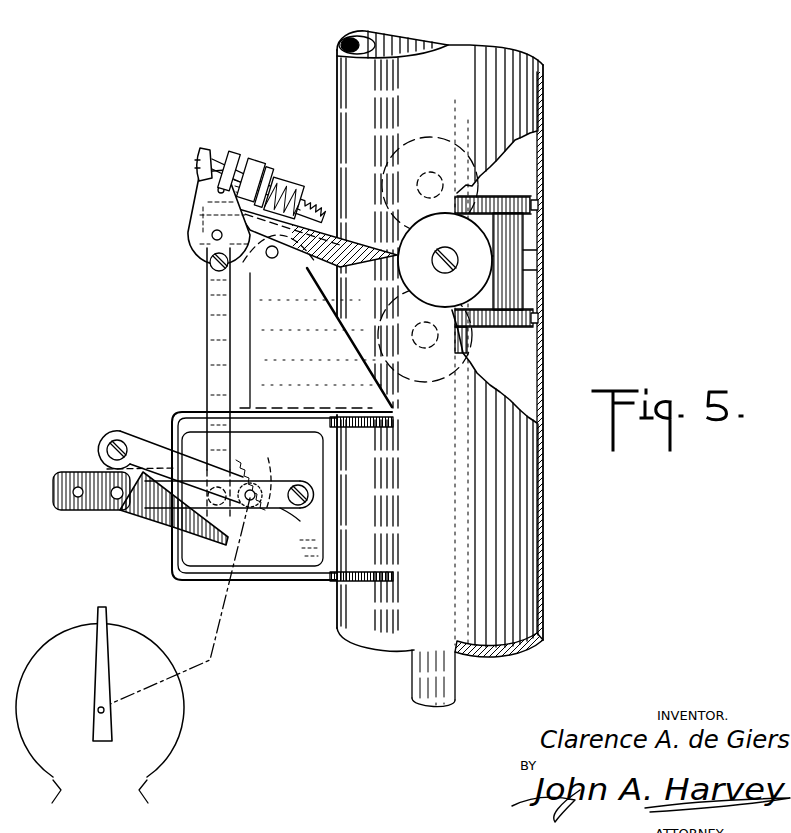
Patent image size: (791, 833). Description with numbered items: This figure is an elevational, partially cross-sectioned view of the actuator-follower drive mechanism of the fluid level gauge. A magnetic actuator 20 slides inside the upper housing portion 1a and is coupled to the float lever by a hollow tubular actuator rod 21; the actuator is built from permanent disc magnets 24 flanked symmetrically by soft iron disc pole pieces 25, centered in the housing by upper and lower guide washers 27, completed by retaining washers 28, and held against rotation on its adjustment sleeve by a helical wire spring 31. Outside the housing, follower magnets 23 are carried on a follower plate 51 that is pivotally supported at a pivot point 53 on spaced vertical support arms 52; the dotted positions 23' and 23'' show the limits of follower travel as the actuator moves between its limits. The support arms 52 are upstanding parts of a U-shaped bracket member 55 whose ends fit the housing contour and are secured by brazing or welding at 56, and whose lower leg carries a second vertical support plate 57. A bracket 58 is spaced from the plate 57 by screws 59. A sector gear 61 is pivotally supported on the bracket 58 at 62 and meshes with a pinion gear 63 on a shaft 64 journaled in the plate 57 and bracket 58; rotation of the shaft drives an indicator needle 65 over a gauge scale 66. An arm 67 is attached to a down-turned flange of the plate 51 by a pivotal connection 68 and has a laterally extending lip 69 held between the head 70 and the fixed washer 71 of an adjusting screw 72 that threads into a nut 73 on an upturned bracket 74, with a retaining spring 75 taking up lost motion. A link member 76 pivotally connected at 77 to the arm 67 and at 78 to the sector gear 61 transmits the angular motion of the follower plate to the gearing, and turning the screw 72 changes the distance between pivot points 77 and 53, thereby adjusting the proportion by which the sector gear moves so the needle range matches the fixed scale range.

The upper housing portion 1a is at (527, 507).
The magnetic actuator 20 is at (500, 190).
The actuator rod 21 is at (445, 687).
The follower magnets 23 is at (432, 260).
The follower magnet position 23' is at (425, 358).
The follower magnet position 23'' is at (430, 166).
The permanent disc magnets 24 is at (530, 275).
The disc pole pieces 25 is at (531, 231).
The guide washers 27 is at (538, 205).
The retaining washers 28 is at (530, 178).
The helical wire spring 31 is at (470, 335).
The follower plate 51 is at (362, 245).
The vertical support arms 52 is at (263, 327).
The pivot point 53 is at (272, 259).
The U-shaped bracket member 55 is at (170, 432).
The brazing or welding 56 is at (370, 426).
The second vertical support plate 57 is at (324, 456).
The bracket 58 is at (288, 509).
The screws 59 is at (108, 446).
The sector gear 61 is at (150, 511).
The pivot of sector gear 62 is at (112, 500).
The pinion gear 63 is at (260, 474).
The shaft 64 is at (252, 500).
The indicator needle 65 is at (107, 641).
The gauge scale 66 is at (183, 735).
The arm 67 is at (198, 216).
The pivotal connection 68 is at (211, 236).
The lip 69 is at (222, 168).
The head 70 is at (199, 154).
The fixed washer 71 is at (232, 150).
The adjusting screw 72 is at (289, 185).
The nut 73 is at (265, 170).
The upturned bracket 74 is at (254, 166).
The retaining spring 75 is at (311, 205).
The link member 76 is at (214, 360).
The pivot point 77 is at (209, 264).
The pivotal connection 78 is at (215, 508).